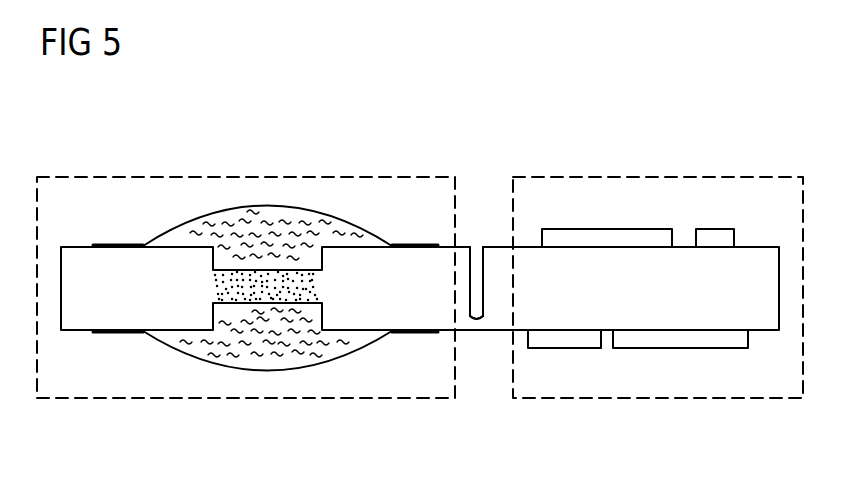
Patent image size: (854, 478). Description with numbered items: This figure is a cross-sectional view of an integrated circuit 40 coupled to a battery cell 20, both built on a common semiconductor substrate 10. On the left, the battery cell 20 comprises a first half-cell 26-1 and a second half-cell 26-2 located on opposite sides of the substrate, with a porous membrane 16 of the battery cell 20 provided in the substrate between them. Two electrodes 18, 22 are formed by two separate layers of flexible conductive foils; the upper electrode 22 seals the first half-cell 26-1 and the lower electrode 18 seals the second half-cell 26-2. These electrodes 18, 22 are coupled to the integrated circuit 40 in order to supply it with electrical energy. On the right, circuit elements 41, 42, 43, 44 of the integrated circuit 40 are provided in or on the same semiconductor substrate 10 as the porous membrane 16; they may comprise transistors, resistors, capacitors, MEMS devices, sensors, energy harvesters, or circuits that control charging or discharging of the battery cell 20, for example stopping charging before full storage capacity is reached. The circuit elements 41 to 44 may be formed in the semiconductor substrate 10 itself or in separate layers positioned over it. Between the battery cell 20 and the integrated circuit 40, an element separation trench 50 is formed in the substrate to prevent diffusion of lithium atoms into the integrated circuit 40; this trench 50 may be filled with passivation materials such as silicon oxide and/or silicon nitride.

The semiconductor substrate 10 is at (83, 258).
The porous membrane 16 is at (301, 283).
The electrode 18 is at (338, 355).
The battery cell 20 is at (235, 122).
The electrode 22 is at (266, 204).
The first half-cell 26-1 is at (222, 222).
The second half-cell 26-2 is at (225, 355).
The integrated circuit 40 is at (661, 120).
The circuit element 41 is at (603, 232).
The circuit element 42 is at (715, 232).
The circuit element 43 is at (560, 340).
The circuit element 44 is at (682, 340).
The element separation trench 50 is at (481, 228).